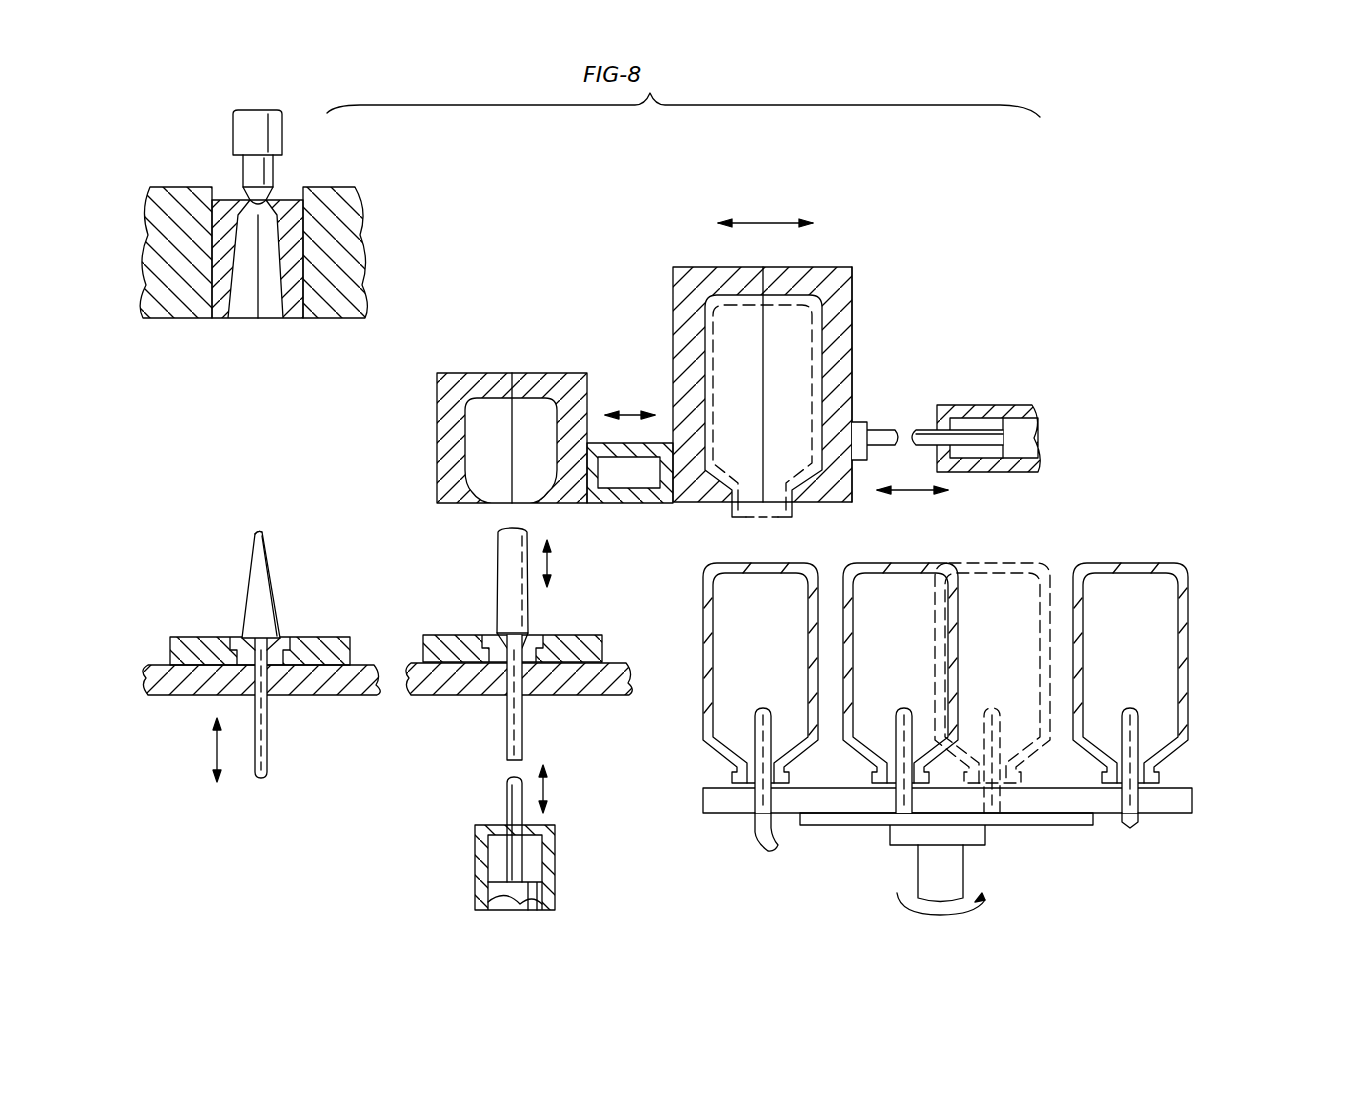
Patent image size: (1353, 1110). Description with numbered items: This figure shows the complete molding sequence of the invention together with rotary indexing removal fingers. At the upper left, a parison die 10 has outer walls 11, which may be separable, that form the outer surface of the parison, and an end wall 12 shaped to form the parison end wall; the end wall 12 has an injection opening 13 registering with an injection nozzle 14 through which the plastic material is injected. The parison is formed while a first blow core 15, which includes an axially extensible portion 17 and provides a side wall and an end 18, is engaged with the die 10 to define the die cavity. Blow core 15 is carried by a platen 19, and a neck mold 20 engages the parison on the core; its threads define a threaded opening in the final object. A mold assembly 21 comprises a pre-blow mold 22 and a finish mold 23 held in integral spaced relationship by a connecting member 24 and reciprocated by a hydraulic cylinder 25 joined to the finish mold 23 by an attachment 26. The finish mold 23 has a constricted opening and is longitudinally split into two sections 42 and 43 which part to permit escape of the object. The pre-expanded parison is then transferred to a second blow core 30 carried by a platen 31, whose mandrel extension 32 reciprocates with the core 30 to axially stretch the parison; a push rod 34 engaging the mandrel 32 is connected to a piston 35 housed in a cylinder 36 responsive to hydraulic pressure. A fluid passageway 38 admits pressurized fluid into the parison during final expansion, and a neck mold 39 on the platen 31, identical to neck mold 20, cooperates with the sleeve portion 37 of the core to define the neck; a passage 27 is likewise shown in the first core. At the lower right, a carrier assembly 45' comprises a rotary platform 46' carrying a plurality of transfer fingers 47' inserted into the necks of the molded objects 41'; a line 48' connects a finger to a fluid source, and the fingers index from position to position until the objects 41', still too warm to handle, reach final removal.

The parison die 10 is at (203, 288).
The outer walls 11 is at (279, 292).
The end wall 12 is at (303, 193).
The injection opening 13 is at (262, 201).
The injection nozzle 14 is at (266, 148).
The first blow core 15 is at (280, 592).
The axially extensible portion 17 is at (270, 771).
The end 18 is at (266, 532).
The platen 19 is at (168, 692).
The neck mold 20 is at (184, 645).
The mold assembly 21 is at (661, 246).
The pre-blow mold 22 is at (555, 382).
The finish mold 23 is at (853, 301).
The connecting member 24 is at (632, 494).
The hydraulic cylinder 25 is at (1012, 473).
The attachment 26 is at (863, 427).
The core rod air passage 27 is at (268, 726).
The blow core 30 is at (497, 573).
The platen 31 is at (620, 686).
The mandrel extension 32 is at (525, 721).
The push rod 34 is at (505, 786).
The piston 35 is at (535, 891).
The cylinder 36 is at (558, 846).
The sleeve portion 37 is at (531, 634).
The fluid passageway 38 is at (518, 743).
The neck mold 39 is at (603, 638).
The objects 41' is at (977, 673).
The finish mold section 42 is at (821, 267).
The finish mold section 43 is at (683, 286).
The carrier assembly 45' is at (976, 784).
The rotary platform 46' is at (1002, 864).
The transfer fingers 47' is at (997, 742).
The air tube 48' is at (767, 857).